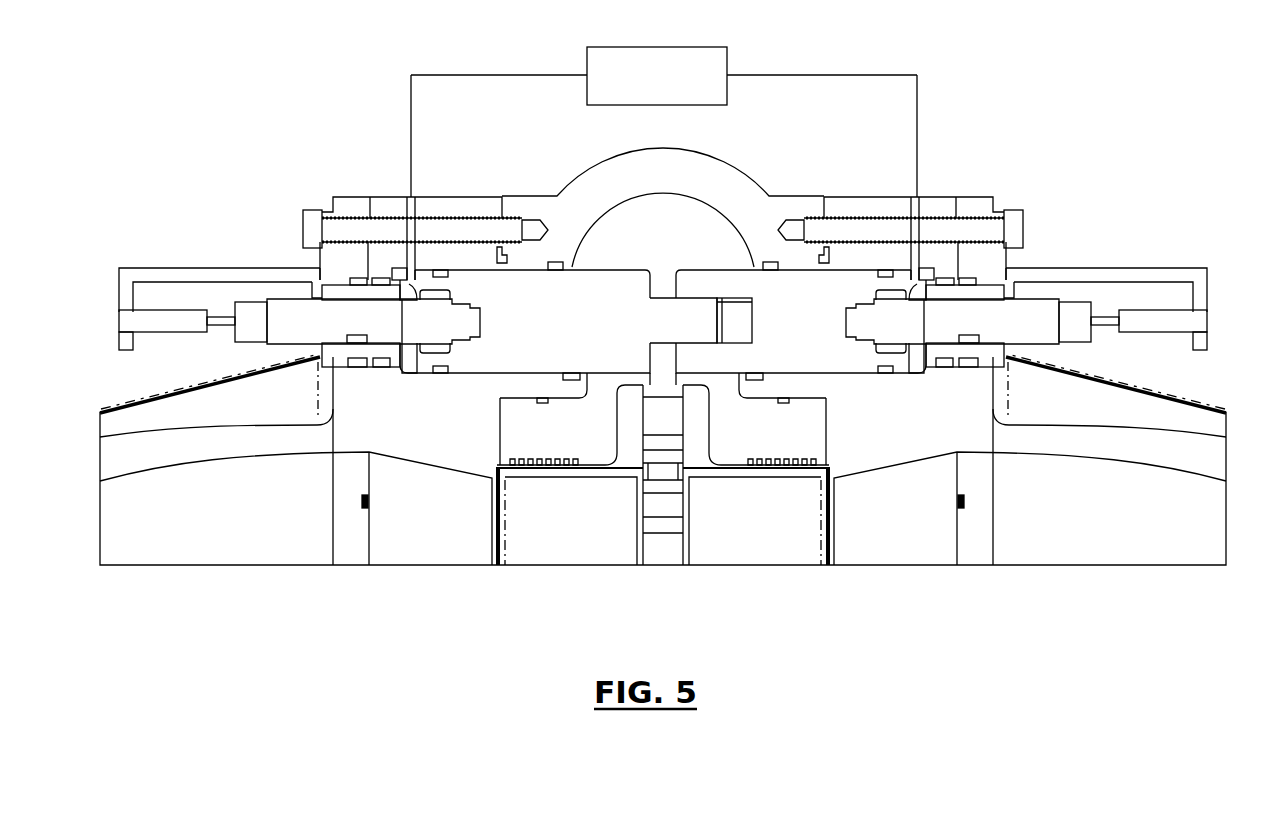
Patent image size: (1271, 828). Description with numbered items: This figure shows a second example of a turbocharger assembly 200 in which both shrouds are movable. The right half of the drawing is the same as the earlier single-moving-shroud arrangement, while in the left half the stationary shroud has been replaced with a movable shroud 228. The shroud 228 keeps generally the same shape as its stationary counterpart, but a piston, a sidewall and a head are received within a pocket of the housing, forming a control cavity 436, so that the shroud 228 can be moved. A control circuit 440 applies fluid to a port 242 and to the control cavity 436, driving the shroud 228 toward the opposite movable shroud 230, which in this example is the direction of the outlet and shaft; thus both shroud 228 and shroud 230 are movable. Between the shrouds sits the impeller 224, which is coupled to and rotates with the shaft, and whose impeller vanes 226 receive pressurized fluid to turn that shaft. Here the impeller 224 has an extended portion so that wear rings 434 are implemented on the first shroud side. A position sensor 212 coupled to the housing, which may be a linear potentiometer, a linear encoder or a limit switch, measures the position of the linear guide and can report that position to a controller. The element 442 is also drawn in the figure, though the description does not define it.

The turbocharger assembly 200 is at (278, 130).
The position sensor 212 is at (171, 311).
The impeller 224 is at (567, 472).
The impeller vanes 226 is at (663, 475).
The shroud 228 is at (598, 333).
The movable shroud 230 is at (823, 363).
The port 242 is at (407, 196).
The wear rings 434 is at (530, 460).
The control cavity 436 is at (407, 292).
The control circuit 440 is at (623, 48).
The actuator linkage 442 is at (229, 334).